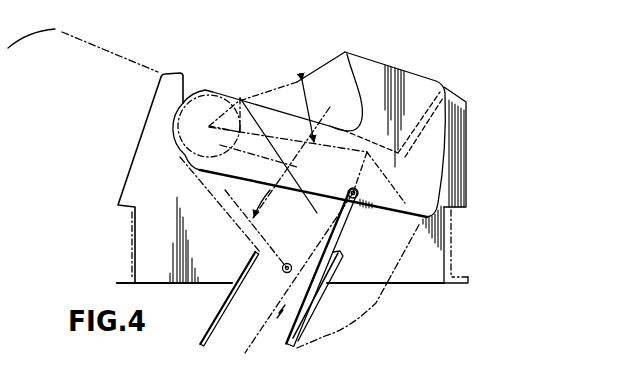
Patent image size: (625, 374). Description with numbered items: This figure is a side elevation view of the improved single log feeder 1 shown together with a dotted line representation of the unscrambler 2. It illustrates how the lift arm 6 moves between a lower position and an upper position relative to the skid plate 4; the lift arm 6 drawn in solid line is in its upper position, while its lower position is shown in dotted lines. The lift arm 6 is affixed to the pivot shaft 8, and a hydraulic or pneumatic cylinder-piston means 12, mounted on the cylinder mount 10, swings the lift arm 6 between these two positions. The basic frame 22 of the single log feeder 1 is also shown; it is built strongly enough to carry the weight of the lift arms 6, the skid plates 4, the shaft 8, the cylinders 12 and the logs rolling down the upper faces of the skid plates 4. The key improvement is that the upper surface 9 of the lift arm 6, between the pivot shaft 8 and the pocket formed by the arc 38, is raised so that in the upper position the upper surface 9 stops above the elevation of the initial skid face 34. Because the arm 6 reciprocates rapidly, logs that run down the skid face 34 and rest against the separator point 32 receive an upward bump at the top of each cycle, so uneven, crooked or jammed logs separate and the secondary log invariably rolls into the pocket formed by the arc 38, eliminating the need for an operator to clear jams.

The single log feeder 1 is at (112, 163).
The unscrambler 2 is at (57, 31).
The skid plate 4 is at (143, 117).
The lift arm 6 is at (420, 77).
The pivot shaft 8 is at (213, 93).
The upper surface 9 is at (250, 95).
The cylinder mount 10 is at (358, 203).
The cylinder-piston means 12 is at (250, 323).
The frame 22 is at (133, 250).
The separator point 32 is at (347, 50).
The initial skid face 34 is at (283, 108).
The arc 38 is at (360, 85).